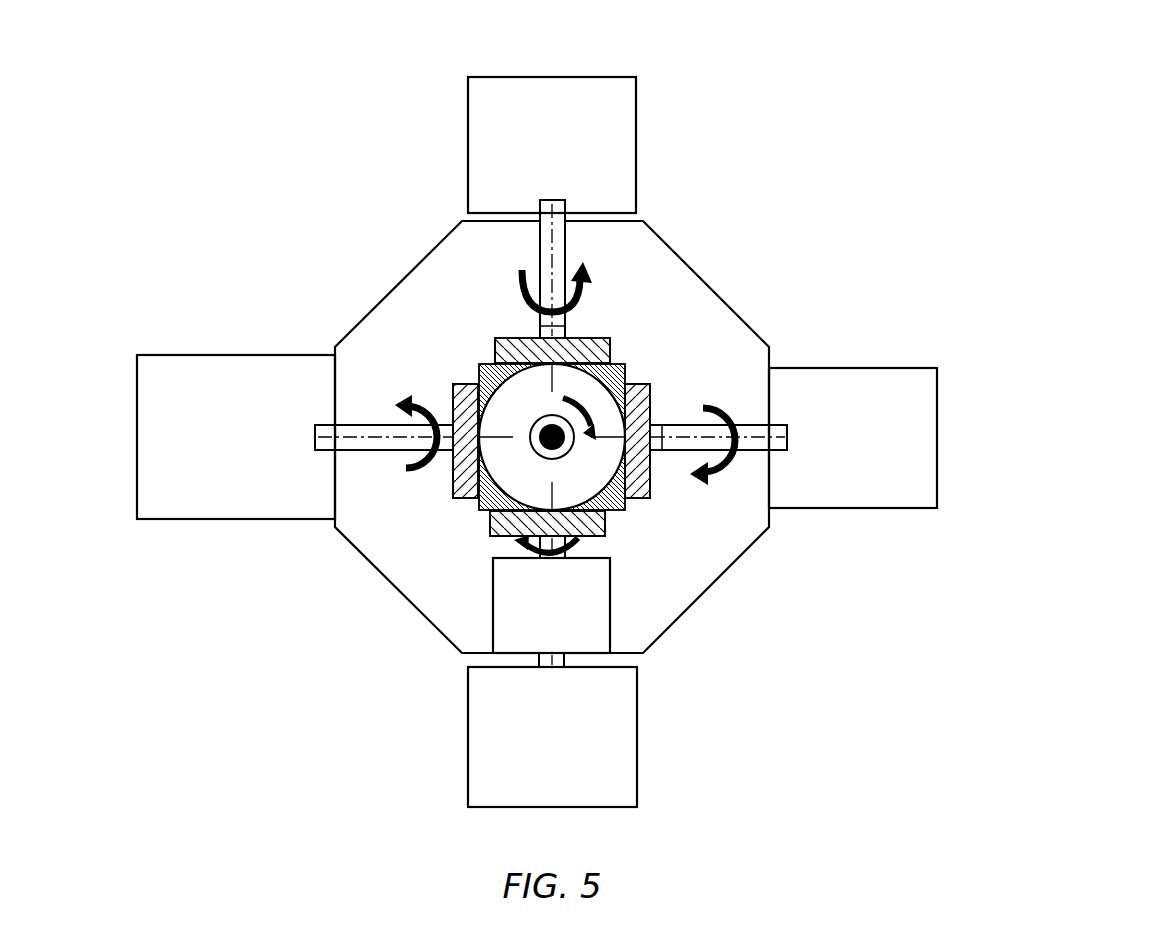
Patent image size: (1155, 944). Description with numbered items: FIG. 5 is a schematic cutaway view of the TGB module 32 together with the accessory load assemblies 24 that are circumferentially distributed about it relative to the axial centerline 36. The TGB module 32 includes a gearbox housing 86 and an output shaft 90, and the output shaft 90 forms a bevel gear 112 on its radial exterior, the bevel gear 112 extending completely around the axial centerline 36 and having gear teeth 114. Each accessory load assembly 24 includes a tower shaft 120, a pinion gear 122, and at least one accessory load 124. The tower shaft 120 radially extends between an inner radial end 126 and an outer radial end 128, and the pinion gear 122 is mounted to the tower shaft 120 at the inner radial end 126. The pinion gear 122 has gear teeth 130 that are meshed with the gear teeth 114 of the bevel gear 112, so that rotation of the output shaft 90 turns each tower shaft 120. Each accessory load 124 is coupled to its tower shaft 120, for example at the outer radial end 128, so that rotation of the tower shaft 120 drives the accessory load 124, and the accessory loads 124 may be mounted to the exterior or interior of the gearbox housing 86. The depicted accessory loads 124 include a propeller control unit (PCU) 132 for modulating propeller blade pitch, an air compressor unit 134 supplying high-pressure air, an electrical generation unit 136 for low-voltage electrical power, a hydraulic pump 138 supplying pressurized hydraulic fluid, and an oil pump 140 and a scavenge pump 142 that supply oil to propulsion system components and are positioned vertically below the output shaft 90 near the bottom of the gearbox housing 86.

The accessory load assembly 24 is at (1005, 411).
The TGB module 32 is at (863, 143).
The axial centerline 36 is at (536, 455).
The gearbox housing 86 is at (385, 297).
The output shaft 90 is at (585, 480).
The bevel gear 112 is at (478, 368).
The gear teeth 114 is at (467, 516).
The tower shaft 120 is at (557, 252).
The pinion gear 122 is at (513, 338).
The accessory load 124 is at (636, 120).
The inner radial end 126 is at (583, 323).
The outer radial end 128 is at (516, 237).
The gear teeth 130 is at (614, 334).
The propeller control unit (PCU) 132 is at (576, 77).
The air compressor unit 134 is at (137, 431).
The electrical generation unit 136 is at (937, 459).
The hydraulic pump 138 is at (468, 747).
The oil pump 140 is at (493, 607).
The scavenge pump 142 is at (478, 614).